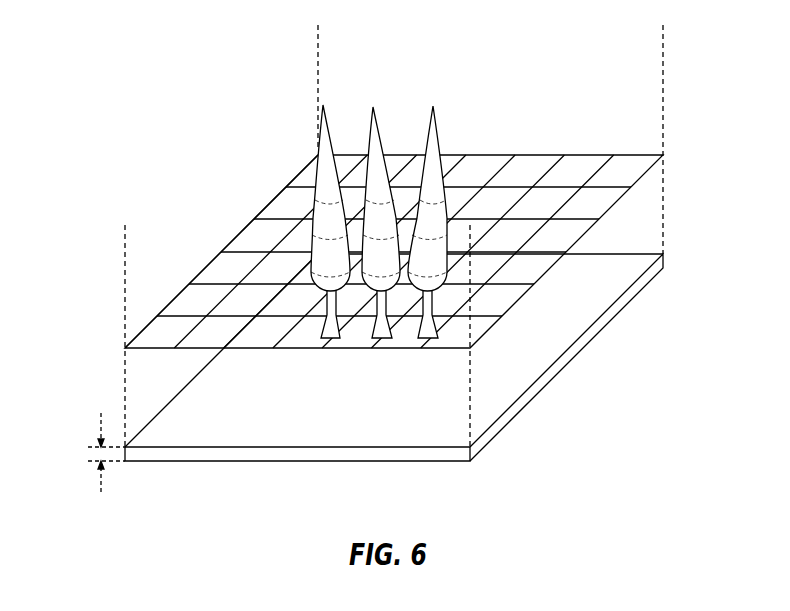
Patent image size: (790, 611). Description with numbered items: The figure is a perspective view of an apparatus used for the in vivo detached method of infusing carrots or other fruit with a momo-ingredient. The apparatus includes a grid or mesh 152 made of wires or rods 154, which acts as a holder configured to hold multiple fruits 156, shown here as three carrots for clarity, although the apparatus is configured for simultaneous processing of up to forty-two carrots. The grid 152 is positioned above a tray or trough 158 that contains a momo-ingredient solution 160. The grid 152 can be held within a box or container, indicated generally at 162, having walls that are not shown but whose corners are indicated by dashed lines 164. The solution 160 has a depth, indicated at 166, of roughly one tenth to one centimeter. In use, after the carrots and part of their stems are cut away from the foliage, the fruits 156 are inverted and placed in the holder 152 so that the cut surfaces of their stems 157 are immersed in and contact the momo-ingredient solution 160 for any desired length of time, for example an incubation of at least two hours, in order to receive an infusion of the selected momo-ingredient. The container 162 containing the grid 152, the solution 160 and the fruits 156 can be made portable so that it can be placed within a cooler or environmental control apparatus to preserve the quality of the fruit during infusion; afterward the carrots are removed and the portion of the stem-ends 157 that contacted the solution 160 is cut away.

The grid or mesh 152 is at (394, 221).
The wires or rods 154 is at (602, 166).
The fruits 156 is at (328, 118).
The stems 157 is at (333, 340).
The tray or trough 158 is at (614, 305).
The momo-ingredient solution 160 is at (394, 350).
The box or container 162 is at (229, 244).
The dashed lines 164 is at (318, 58).
The depth of solution 166 is at (100, 423).